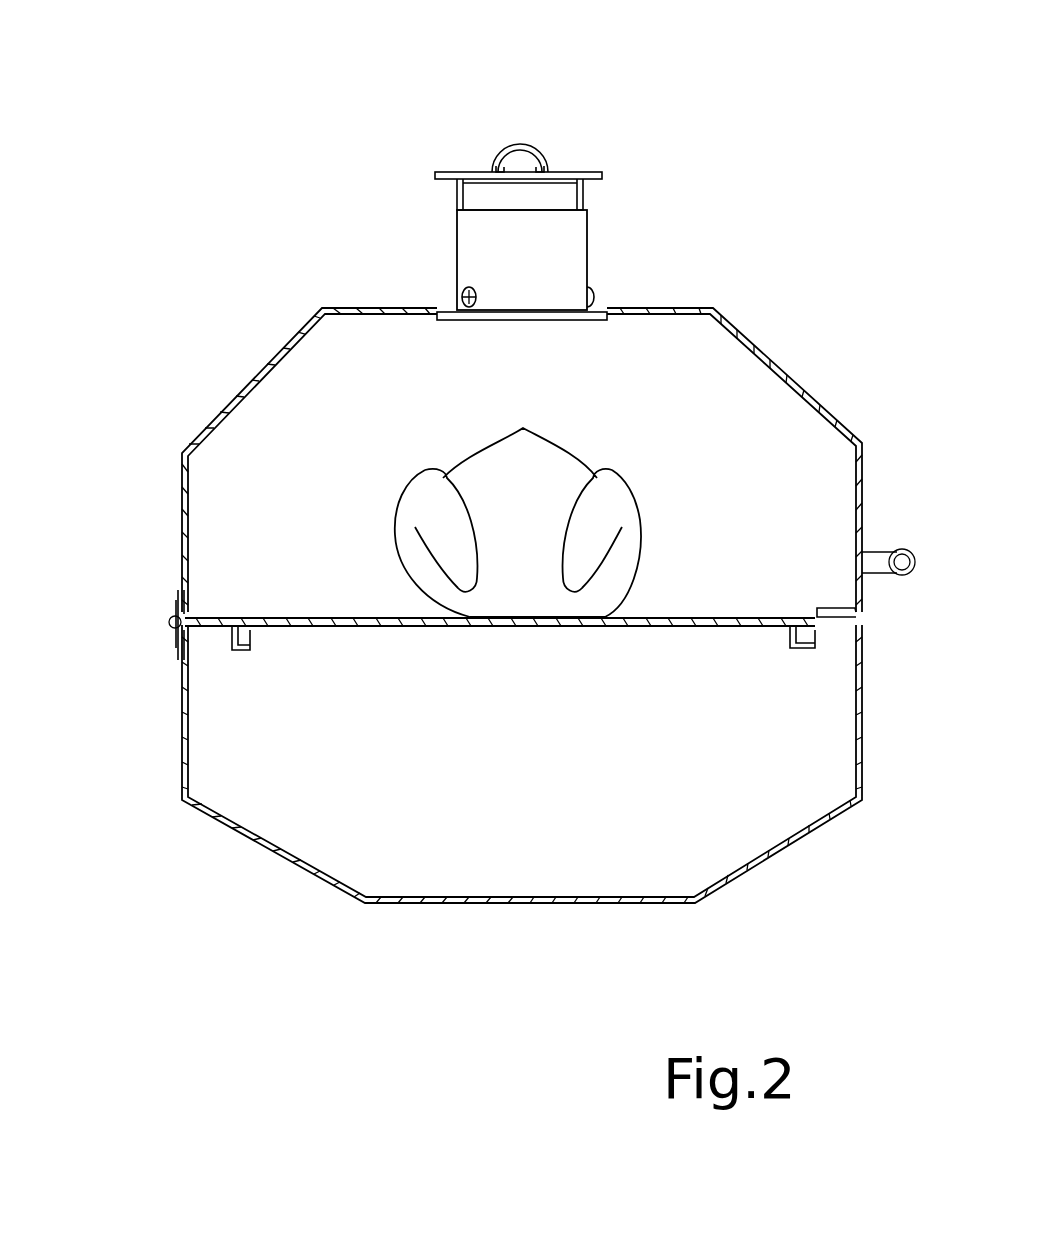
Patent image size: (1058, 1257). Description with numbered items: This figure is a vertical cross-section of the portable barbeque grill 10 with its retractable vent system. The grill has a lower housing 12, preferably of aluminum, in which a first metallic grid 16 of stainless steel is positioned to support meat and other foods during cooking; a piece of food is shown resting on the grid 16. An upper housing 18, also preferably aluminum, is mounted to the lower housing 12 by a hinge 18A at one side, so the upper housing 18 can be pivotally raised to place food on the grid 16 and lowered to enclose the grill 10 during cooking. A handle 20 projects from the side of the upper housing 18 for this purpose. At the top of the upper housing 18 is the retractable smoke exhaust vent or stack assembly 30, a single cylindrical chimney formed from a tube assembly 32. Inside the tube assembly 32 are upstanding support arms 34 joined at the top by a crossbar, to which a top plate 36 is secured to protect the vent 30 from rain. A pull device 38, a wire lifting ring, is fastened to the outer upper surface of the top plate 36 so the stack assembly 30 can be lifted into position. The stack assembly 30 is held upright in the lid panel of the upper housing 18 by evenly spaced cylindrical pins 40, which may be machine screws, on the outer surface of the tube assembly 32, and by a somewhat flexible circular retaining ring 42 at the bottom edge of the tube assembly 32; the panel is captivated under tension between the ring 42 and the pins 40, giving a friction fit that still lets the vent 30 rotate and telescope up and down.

The portable barbeque grill 10 is at (803, 173).
The lower housing 12 is at (287, 863).
The first metallic grid 16 is at (747, 617).
The upper housing 18 is at (777, 370).
The hinge 18A is at (172, 616).
The handle 20 is at (893, 547).
The retractable smoke exhaust vent 30 is at (466, 103).
The tube assembly 32 is at (487, 252).
The upstanding support arms 34 is at (583, 190).
The top plate 36 is at (585, 167).
The pull device 38 is at (530, 140).
The cylindrical pins 40 is at (462, 291).
The circular retaining ring 42 is at (595, 320).